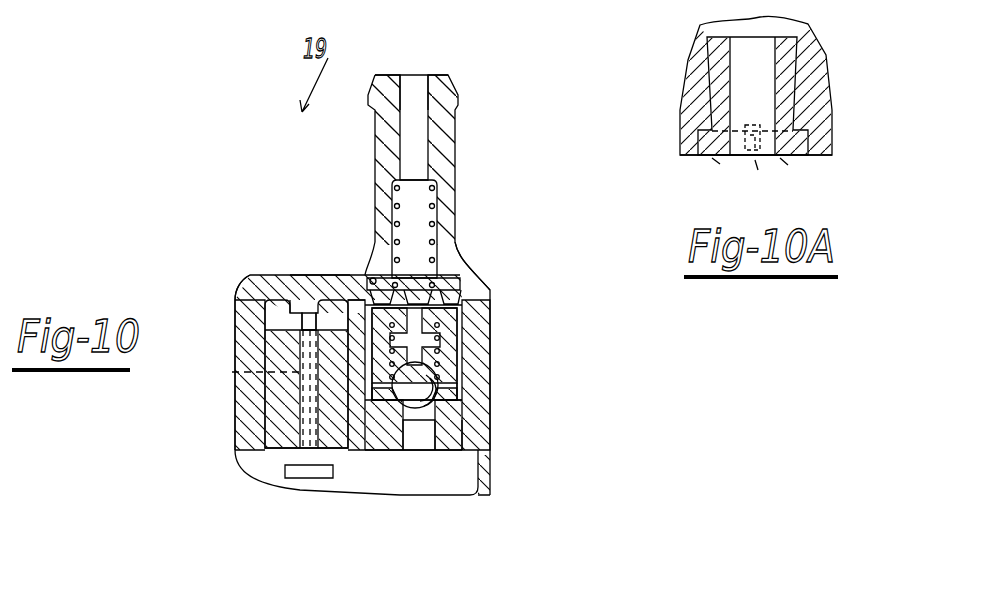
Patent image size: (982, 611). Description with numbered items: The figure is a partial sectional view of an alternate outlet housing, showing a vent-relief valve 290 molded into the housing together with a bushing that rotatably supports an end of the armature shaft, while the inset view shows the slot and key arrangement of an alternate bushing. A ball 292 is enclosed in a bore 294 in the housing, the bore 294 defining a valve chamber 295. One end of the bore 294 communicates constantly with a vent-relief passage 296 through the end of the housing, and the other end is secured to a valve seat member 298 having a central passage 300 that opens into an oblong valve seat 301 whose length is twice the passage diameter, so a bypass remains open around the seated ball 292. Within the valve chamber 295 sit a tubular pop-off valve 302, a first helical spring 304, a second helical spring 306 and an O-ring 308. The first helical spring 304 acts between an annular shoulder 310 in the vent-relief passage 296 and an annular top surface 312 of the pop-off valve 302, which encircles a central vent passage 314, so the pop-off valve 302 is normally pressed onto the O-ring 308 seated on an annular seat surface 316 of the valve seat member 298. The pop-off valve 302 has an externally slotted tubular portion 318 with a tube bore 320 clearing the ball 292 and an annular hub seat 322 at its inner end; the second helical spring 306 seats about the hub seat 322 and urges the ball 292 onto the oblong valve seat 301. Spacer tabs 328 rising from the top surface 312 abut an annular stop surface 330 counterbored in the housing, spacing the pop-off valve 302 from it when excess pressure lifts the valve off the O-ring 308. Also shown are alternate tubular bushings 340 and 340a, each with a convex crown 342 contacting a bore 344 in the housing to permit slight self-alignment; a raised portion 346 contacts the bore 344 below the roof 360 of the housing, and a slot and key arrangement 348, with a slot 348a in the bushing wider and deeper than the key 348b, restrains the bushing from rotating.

In FIG. 10, the vent-relief valve 290 is at (390, 68).
In FIG. 10, the ball 292 is at (413, 452).
In FIG. 10, the bore 294 is at (490, 392).
In FIG. 10, the valve chamber 295 is at (470, 285).
In FIG. 10, the vent-relief passage 296 is at (418, 82).
In FIG. 10, the valve seat member 298 is at (458, 458).
In FIG. 10, the central passage 300 is at (417, 455).
In FIG. 10, the oblong valve seat 301 is at (490, 460).
In FIG. 10, the tubular pop-off valve 302 is at (456, 312).
In FIG. 10, the first helical spring 304 is at (450, 215).
In FIG. 10, the second helical spring 306 is at (490, 372).
In FIG. 10, the O-ring 308 is at (490, 440).
In FIG. 10, the annular shoulder 310 is at (437, 182).
In FIG. 10, the annular top surface 312 is at (473, 279).
In FIG. 10, the central vent passage 314 is at (490, 348).
In FIG. 10, the annular seat surface 316 is at (372, 452).
In FIG. 10, the externally slotted tubular portion 318 is at (370, 300).
In FIG. 10, the tube bore 320 is at (490, 412).
In FIG. 10, the annular hub seat 322 is at (335, 275).
In FIG. 10, the spacer tab 328 is at (462, 296).
In FIG. 10, the annular stop surface 330 is at (370, 280).
In FIG. 10, the tubular bushing 340 is at (262, 416).
In FIG. 10A, the tubular bushing 340a is at (843, 62).
In FIG. 10, the crown 342 is at (265, 322).
In FIG. 10A, the crown 342 is at (705, 40).
In FIG. 10, the bore 344 is at (302, 468).
In FIG. 10, the raised portion 346 is at (275, 393).
In FIG. 10, the slot and key arrangement 348 is at (284, 356).
In FIG. 10A, the slot and key arrangement 348 is at (718, 160).
In FIG. 10, the slot 348a is at (245, 374).
In FIG. 10A, the slot 348a is at (733, 162).
In FIG. 10, the key 348b is at (265, 306).
In FIG. 10A, the key 348b is at (772, 160).
In FIG. 10, the roof 360 is at (250, 275).